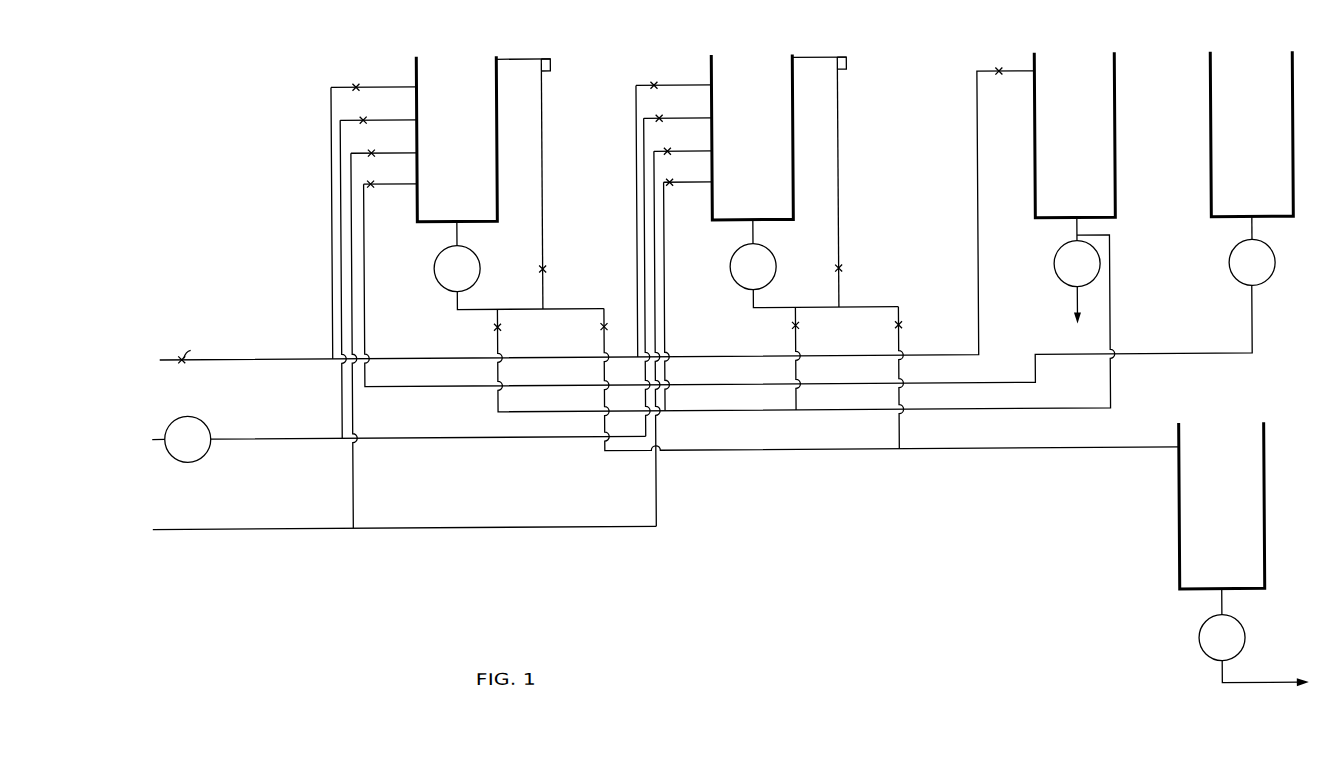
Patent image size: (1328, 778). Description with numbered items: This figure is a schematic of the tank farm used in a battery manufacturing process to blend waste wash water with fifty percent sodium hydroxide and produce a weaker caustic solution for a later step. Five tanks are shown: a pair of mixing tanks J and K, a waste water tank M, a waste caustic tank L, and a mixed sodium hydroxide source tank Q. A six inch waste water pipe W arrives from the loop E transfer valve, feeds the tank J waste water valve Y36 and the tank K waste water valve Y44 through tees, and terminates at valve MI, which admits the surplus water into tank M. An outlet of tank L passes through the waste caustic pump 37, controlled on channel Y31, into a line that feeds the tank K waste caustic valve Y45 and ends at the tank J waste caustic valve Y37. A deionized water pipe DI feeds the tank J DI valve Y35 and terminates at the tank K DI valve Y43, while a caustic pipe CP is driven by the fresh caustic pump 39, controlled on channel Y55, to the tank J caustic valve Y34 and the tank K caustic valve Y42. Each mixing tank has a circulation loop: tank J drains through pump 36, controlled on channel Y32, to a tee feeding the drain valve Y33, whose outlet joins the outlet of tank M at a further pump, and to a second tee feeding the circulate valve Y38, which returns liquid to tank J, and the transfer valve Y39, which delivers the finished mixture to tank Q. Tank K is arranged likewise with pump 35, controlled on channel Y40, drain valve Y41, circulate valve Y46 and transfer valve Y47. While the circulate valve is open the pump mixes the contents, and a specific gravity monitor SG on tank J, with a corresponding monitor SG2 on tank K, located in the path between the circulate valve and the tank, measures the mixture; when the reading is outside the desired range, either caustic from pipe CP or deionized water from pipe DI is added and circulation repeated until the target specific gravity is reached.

The mixing tank J is at (483, 139).
The mixing tank K is at (779, 137).
The waste water tank M is at (1075, 188).
The waste caustic tank L is at (1251, 134).
The mixed sodium hydroxide source tank Q is at (1244, 554).
The specific gravity monitor SG is at (554, 62).
The sight glass (tank K) SG2 is at (850, 62).
The tank J waste water valve WW Y36 is at (374, 208).
The tank J caustic valve C Y34 is at (379, 266).
The tank J DI valve Y35 is at (383, 329).
The tank J waste caustic valve EC Y37 is at (807, 271).
The tank J circulate valve Y38 is at (535, 184).
The tank J drain valve DV Y33 is at (789, 323).
The tank J transfer valve Tr Y39 is at (869, 378).
The tank J pump channel Y32 is at (426, 296).
The pump P36 36 is at (519, 265).
The tank K waste water valve WW Y44 is at (674, 208).
The tank K caustic valve C Y42 is at (679, 265).
The tank K DI valve Y43 is at (680, 328).
The tank K waste caustic valve EC Y45 is at (688, 286).
The tank K circulate valve CV Y46 is at (835, 182).
The tank K drain valve DV Y41 is at (798, 358).
The tank K transfer valve Tr Y47 is at (893, 378).
The tank K pump channel Y40 is at (724, 296).
The pump P35 35 is at (814, 263).
The pump P37 37 is at (1252, 250).
The pump P39 39 is at (399, 426).
The waste caustic pump channel Y31 is at (1290, 286).
The fresh caustic pump channel Y55 is at (230, 427).
The pipe W is at (303, 356).
The valve M1 MI is at (1002, 58).
The pipe CP is at (308, 435).
The pipe DI is at (405, 517).